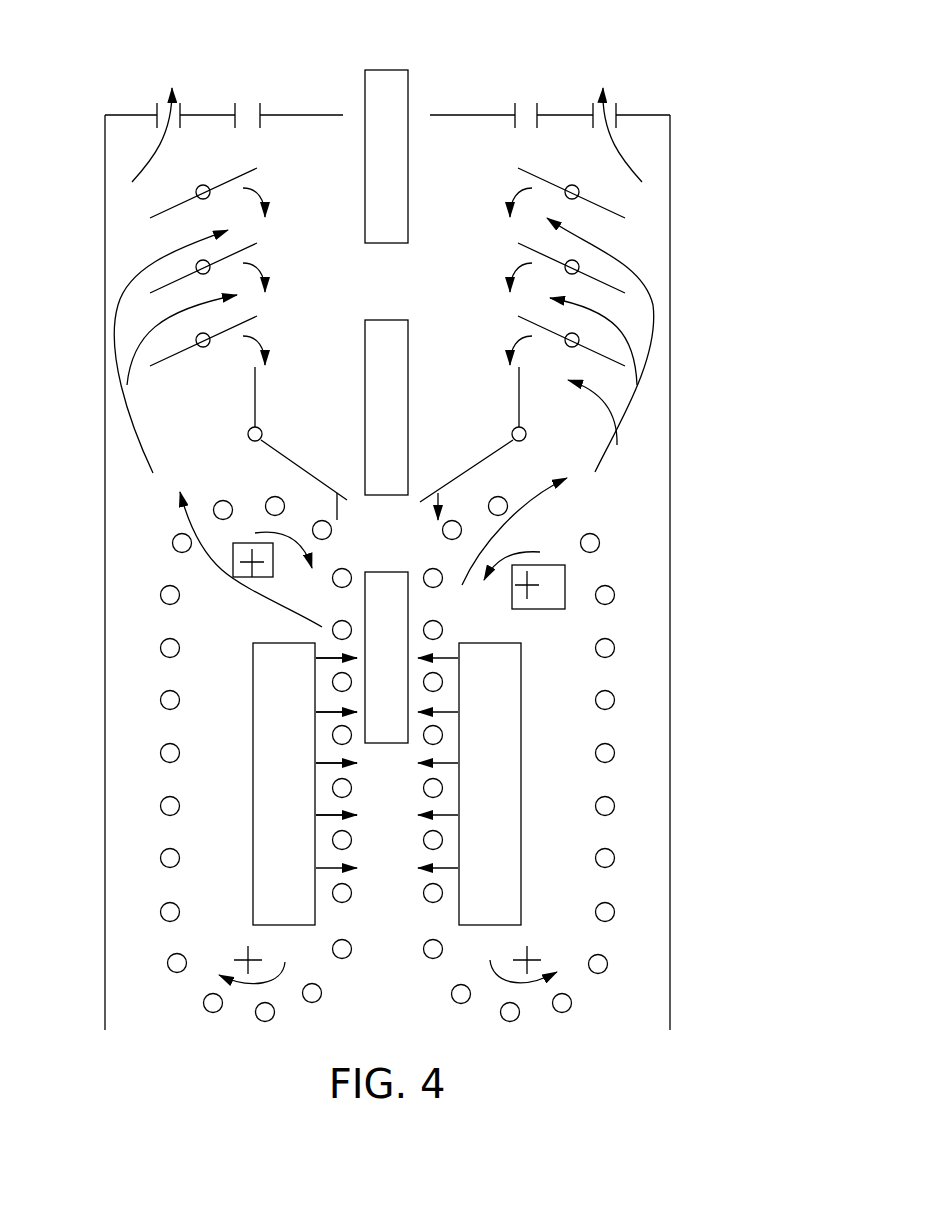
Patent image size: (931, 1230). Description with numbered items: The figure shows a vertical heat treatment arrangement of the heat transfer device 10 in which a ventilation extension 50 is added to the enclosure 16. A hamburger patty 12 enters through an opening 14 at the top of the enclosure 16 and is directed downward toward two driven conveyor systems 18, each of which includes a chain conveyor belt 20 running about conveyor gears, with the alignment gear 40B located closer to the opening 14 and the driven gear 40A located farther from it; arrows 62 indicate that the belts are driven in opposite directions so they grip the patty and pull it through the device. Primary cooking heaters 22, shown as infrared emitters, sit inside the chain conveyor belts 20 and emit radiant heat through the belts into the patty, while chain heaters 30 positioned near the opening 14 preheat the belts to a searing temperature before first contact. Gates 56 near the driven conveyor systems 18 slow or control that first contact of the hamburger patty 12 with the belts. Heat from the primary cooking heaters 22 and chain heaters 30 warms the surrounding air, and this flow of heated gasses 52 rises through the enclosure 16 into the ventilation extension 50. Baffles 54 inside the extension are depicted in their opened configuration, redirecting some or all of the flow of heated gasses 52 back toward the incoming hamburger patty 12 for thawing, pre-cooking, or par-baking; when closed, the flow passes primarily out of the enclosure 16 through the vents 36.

The heat transfer device 10 is at (746, 213).
The hamburger patty 12 is at (397, 92).
The opening 14 is at (351, 82).
The enclosure 16 is at (105, 250).
The driven conveyor systems 18 is at (144, 583).
The chain conveyor belt 20 is at (160, 700).
The primary cooking heaters 22 is at (522, 793).
The chain heaters 30 is at (245, 578).
The vent 36 is at (180, 110).
The driven gear 40A is at (240, 960).
The alignment gear 40B is at (251, 560).
The ventilation extension 50 is at (663, 313).
The flow of heated gasses 52 is at (145, 171).
The baffles 54 is at (203, 185).
The gates 56 is at (283, 457).
The arrows 62 is at (288, 540).